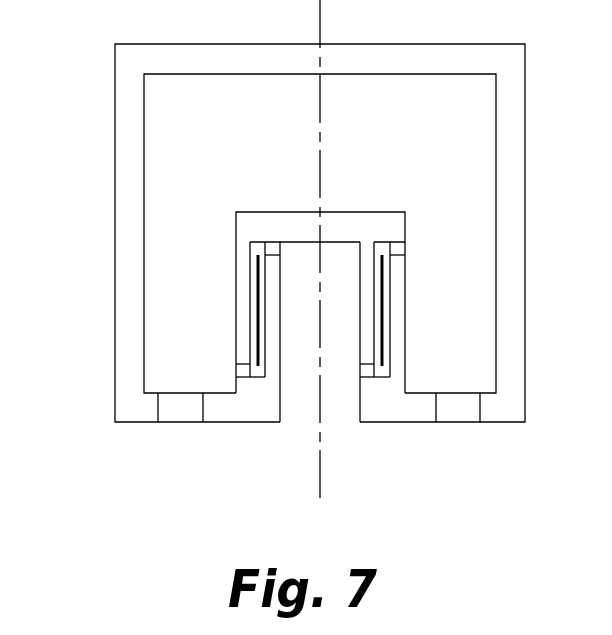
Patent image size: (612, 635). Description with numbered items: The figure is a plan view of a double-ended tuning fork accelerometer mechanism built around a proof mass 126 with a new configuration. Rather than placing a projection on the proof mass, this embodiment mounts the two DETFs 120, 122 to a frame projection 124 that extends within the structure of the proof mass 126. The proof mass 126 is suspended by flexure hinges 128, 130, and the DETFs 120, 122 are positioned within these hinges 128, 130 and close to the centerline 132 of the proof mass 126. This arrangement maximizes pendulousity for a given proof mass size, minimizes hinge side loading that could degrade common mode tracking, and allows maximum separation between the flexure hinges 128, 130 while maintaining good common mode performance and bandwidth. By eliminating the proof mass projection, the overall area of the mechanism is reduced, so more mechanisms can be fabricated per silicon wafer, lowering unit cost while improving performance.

The DETF 120 is at (250, 349).
The DETF 122 is at (392, 350).
The frame projection 124 is at (305, 377).
The proof mass 126 is at (203, 165).
The hinge 128 is at (182, 413).
The hinge 130 is at (455, 415).
The centerline 132 is at (319, 467).